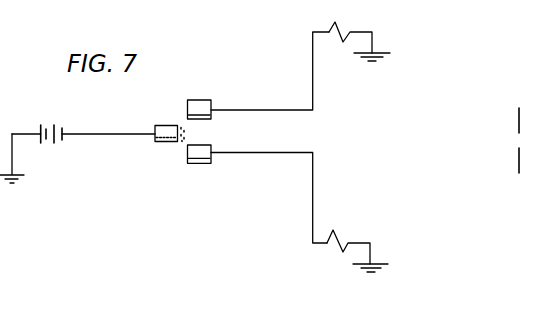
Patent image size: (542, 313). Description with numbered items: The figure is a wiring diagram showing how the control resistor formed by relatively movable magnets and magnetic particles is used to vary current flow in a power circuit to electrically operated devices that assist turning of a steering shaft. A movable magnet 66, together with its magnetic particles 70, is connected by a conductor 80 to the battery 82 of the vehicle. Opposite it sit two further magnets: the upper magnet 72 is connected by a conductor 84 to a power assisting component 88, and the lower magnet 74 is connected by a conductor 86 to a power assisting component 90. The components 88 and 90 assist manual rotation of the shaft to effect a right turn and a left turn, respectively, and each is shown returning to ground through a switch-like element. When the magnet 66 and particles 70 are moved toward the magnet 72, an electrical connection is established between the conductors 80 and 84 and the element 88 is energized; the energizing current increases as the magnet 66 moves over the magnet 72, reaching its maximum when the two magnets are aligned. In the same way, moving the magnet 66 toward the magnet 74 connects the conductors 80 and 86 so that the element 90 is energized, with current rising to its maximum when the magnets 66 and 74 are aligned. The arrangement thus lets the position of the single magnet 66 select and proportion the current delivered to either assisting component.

The magnet 66 is at (163, 127).
The magnetic particles 70 is at (179, 138).
The magnet 72 is at (200, 104).
The magnet 74 is at (202, 157).
The conductor 80 is at (128, 134).
The battery 82 is at (56, 123).
The conductor 84 is at (313, 97).
The conductor 86 is at (313, 198).
The power assisting component 88 is at (338, 28).
The power assisting component 90 is at (342, 254).